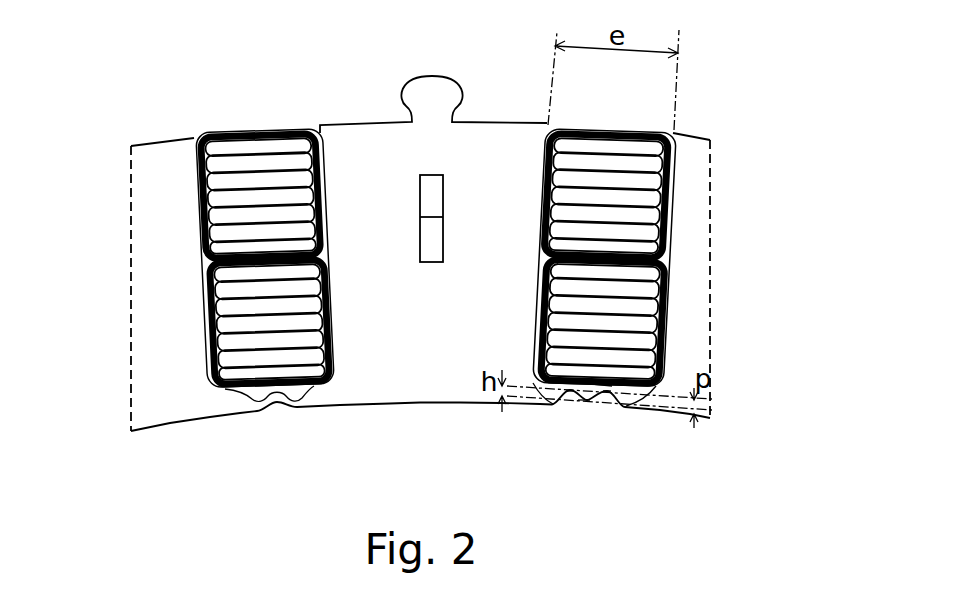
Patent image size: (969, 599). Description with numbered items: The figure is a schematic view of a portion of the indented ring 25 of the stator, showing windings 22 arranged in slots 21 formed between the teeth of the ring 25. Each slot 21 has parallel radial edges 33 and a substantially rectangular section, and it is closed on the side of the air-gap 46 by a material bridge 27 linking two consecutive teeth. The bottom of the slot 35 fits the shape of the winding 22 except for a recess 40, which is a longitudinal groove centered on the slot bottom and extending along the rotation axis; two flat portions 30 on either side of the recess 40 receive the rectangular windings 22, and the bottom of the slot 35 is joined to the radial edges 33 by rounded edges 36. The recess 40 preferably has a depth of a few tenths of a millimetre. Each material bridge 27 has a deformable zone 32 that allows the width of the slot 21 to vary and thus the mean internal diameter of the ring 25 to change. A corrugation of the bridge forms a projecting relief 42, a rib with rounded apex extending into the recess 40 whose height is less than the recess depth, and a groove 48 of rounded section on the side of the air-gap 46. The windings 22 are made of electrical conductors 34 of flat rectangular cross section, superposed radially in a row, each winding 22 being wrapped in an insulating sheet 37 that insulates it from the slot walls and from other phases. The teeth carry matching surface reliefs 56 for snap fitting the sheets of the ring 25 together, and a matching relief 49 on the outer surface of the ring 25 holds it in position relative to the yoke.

The slot 21 is at (637, 227).
The winding 22 is at (318, 170).
The indented ring 25 is at (698, 152).
The material bridge 27 is at (532, 391).
The flat portion 30 is at (230, 391).
The deformable zone 32 is at (600, 410).
The radial edge 33 is at (639, 213).
The electrical conductor 34 is at (645, 197).
The bottom of the slot 35 is at (623, 402).
The rounded edge 36 is at (628, 392).
The insulating sheet 37 is at (672, 165).
The recess 40 is at (573, 393).
The projecting relief 42 is at (600, 386).
The air-gap 46 is at (672, 418).
The groove 48 is at (583, 410).
The matching relief 49 is at (430, 98).
The matching surface relief 56 is at (433, 197).